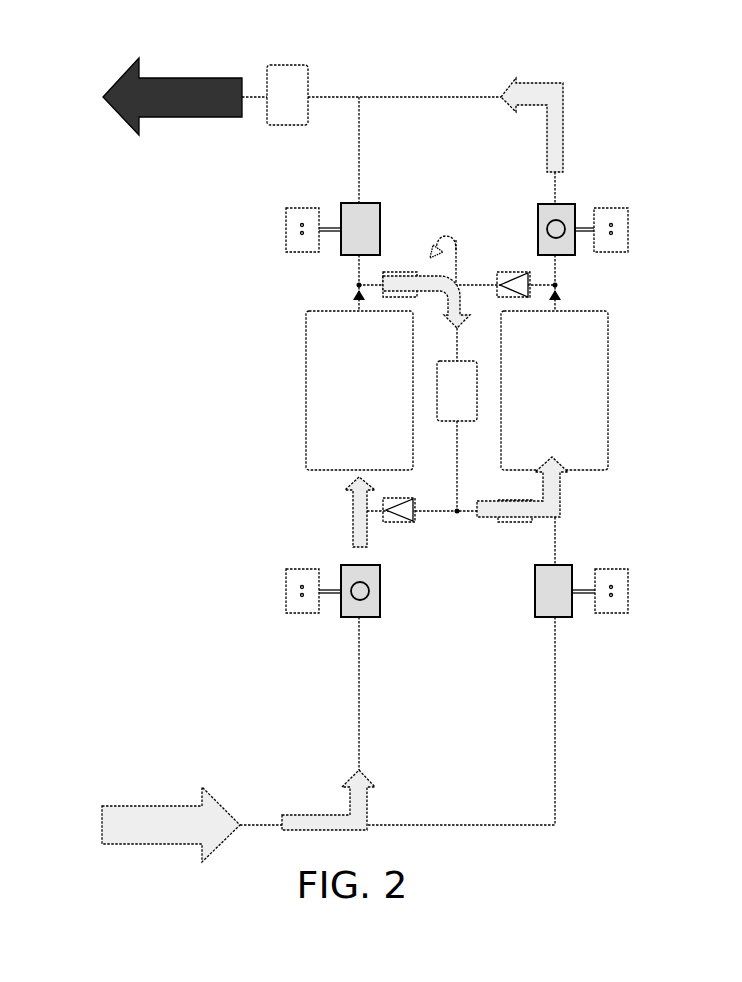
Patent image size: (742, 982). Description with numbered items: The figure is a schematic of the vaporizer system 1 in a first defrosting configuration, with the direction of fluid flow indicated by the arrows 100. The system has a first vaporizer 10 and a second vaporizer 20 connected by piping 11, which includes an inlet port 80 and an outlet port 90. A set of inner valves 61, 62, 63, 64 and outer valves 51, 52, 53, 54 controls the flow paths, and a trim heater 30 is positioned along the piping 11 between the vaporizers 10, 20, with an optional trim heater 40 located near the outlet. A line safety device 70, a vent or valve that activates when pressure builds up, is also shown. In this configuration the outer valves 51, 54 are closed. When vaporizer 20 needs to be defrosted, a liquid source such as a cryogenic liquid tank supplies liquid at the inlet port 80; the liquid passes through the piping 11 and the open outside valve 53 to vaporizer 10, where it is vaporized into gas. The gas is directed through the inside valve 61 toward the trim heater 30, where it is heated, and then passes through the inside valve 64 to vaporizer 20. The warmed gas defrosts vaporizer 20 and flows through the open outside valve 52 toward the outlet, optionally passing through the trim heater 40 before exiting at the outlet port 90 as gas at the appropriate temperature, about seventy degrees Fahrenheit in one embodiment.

The vaporizer system 1 is at (632, 410).
The first vaporizer 10 is at (359, 390).
The piping 11 is at (455, 822).
The second vaporizer 20 is at (554, 390).
The trim heater 30 is at (457, 391).
The optional trim heater 40 is at (287, 95).
The outer valve 51 is at (340, 243).
The outer valve 52 is at (572, 250).
The outer valve 53 is at (378, 600).
The outer valve 54 is at (535, 588).
The inner valve 61 is at (401, 270).
The inner valve 62 is at (518, 270).
The inner valve 63 is at (385, 512).
The inner valve 64 is at (530, 523).
The line safety device 70 is at (456, 236).
The inlet port 80 is at (248, 832).
The outlet port 90 is at (247, 80).
The arrows 100 is at (336, 797).